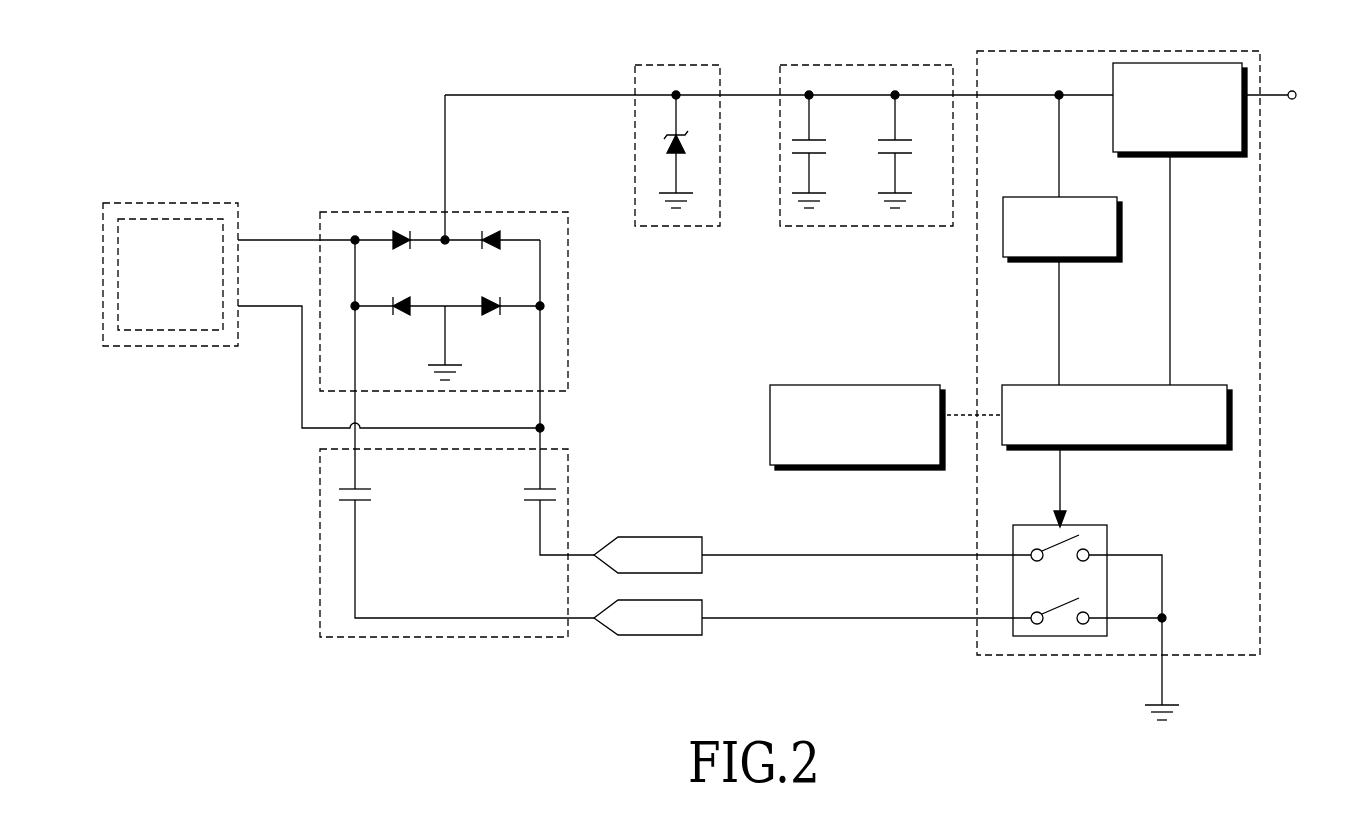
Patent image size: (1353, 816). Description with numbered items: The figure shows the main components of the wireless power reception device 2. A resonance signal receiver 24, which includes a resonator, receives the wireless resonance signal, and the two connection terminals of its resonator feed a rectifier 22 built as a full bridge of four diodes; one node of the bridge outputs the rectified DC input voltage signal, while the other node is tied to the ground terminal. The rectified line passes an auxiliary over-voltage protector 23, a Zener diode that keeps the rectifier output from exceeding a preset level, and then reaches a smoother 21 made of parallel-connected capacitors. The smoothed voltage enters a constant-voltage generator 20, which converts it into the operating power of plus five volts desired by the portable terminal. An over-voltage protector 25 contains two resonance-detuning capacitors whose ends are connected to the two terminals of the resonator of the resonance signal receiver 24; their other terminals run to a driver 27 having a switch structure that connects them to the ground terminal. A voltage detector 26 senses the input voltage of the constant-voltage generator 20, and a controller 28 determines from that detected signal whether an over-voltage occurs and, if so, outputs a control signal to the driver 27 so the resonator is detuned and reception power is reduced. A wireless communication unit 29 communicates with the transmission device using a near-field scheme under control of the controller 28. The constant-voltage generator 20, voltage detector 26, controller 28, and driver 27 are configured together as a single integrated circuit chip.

The wireless power reception device 2 is at (200, 82).
The constant-voltage generator 20 is at (1207, 160).
The smoother 21 is at (864, 63).
The rectifier 22 is at (570, 303).
The auxiliary over-voltage protector 23 is at (675, 63).
The resonance signal receiver 24 is at (178, 348).
The over-voltage protector 25 is at (570, 488).
The voltage detector 26 is at (1090, 195).
The driver 27 is at (1092, 524).
The controller 28 is at (1198, 383).
The wireless communication unit 29 is at (852, 383).